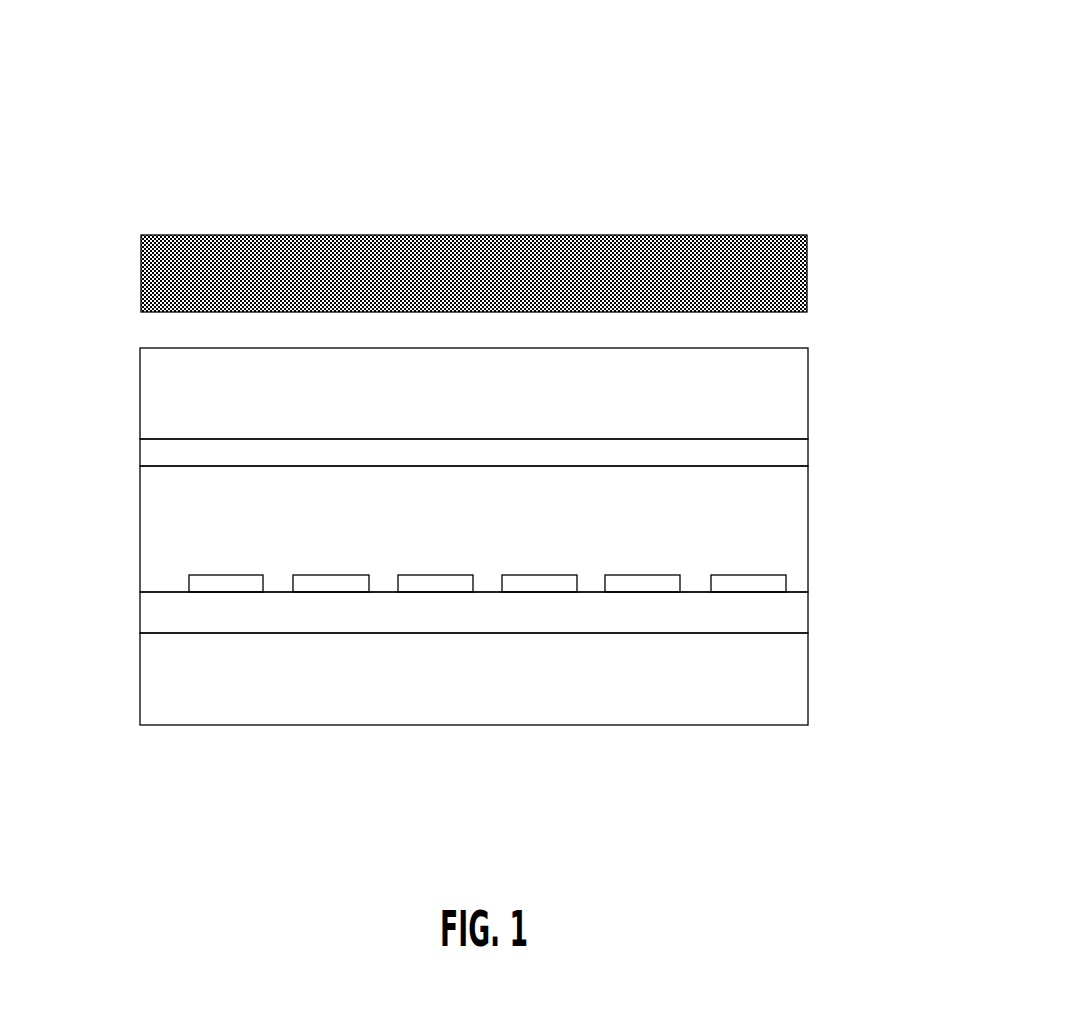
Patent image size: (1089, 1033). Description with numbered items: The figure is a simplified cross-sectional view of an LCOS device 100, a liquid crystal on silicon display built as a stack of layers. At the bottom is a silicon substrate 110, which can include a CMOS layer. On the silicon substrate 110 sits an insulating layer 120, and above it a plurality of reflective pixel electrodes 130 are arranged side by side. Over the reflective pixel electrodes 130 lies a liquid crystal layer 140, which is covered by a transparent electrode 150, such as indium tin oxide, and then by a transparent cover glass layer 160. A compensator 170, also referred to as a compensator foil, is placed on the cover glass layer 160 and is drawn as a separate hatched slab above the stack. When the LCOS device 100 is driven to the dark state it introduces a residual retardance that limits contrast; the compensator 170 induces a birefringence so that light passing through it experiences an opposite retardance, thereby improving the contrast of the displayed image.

The LCOS device 100 is at (942, 71).
The silicon substrate 110 is at (158, 667).
The insulating layer 120 is at (158, 614).
The reflective pixel electrodes 130 is at (725, 582).
The liquid crystal layer 140 is at (156, 507).
The transparent electrode 150 is at (156, 449).
The transparent cover glass layer 160 is at (156, 404).
The compensator 170 is at (154, 282).